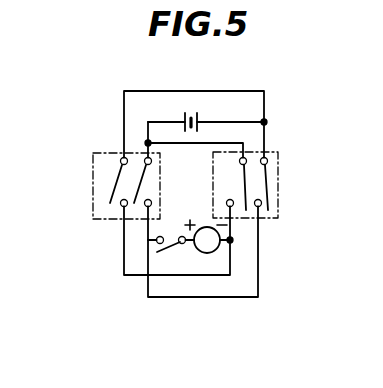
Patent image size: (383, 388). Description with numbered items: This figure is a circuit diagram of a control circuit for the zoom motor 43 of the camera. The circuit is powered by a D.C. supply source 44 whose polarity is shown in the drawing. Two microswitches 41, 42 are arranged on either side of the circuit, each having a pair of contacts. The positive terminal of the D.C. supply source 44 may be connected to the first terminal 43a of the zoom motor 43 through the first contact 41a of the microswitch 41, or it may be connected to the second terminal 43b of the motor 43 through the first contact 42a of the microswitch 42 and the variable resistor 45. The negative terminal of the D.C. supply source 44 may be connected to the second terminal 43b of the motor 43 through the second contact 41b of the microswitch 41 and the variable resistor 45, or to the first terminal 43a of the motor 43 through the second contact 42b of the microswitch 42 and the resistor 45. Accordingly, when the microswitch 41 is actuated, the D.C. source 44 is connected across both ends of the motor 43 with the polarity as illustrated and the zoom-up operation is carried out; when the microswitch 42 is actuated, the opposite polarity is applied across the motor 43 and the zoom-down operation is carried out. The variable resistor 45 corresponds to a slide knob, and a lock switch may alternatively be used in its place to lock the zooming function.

The microswitch 41 is at (103, 162).
The first contact of the microswitch 41a is at (146, 208).
The second contact of the microswitch 41b is at (119, 207).
The microswitch 42 is at (272, 188).
The first contact of the microswitch 42a is at (246, 158).
The second contact of the microswitch 42b is at (268, 160).
The zoom motor 43 is at (215, 227).
The first terminal of the zoom motor 43a is at (184, 243).
The second terminal of the zoom motor 43b is at (232, 243).
The D.C. supply source 44 is at (201, 113).
The variable resistor 45 is at (172, 246).